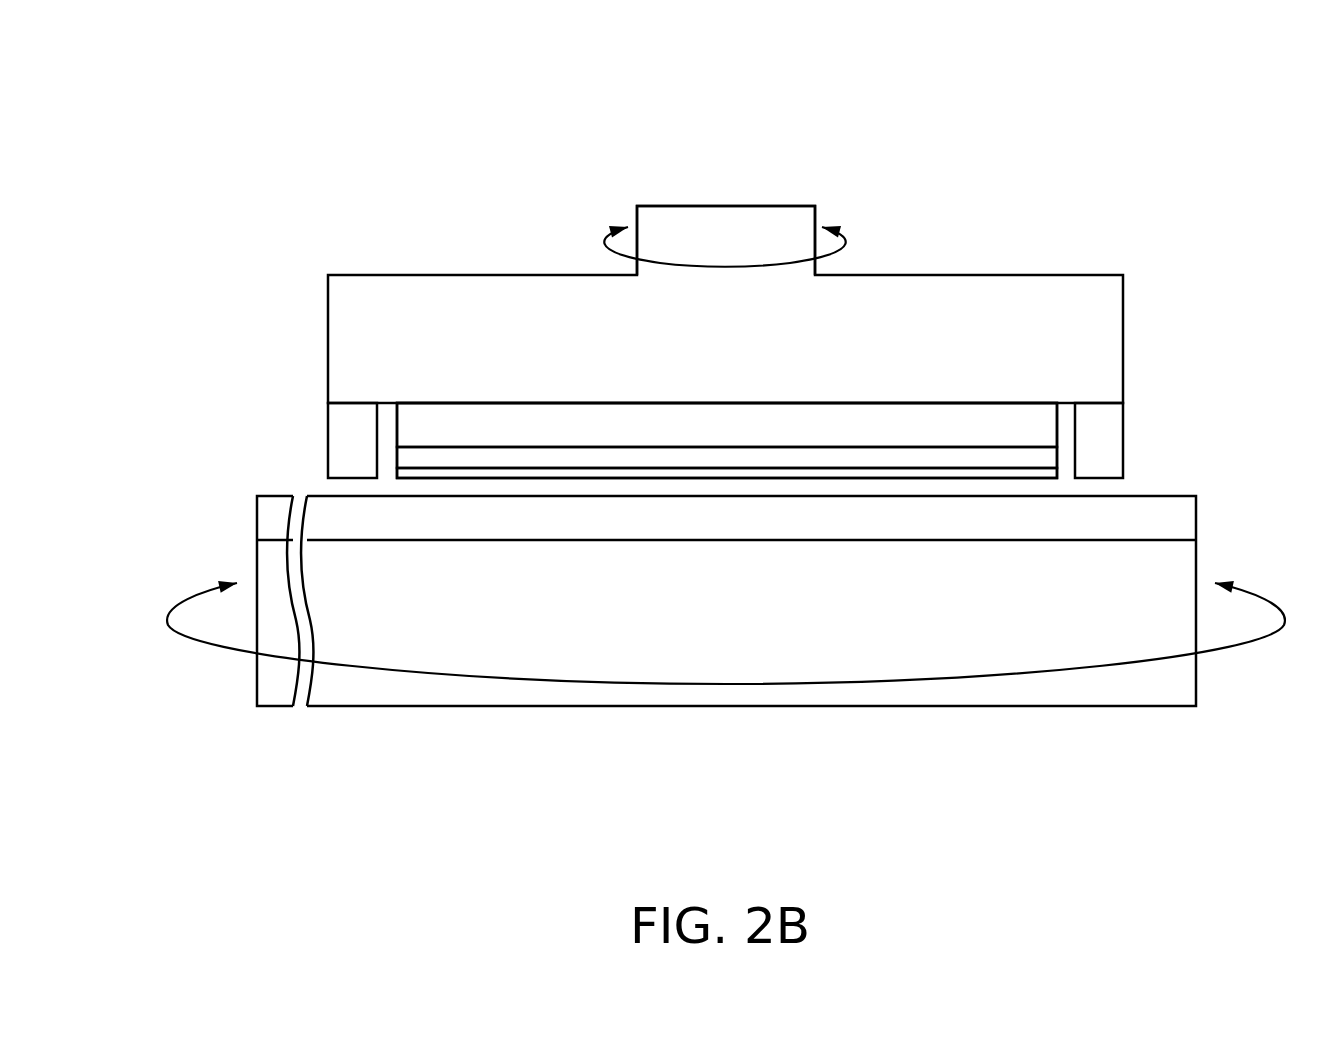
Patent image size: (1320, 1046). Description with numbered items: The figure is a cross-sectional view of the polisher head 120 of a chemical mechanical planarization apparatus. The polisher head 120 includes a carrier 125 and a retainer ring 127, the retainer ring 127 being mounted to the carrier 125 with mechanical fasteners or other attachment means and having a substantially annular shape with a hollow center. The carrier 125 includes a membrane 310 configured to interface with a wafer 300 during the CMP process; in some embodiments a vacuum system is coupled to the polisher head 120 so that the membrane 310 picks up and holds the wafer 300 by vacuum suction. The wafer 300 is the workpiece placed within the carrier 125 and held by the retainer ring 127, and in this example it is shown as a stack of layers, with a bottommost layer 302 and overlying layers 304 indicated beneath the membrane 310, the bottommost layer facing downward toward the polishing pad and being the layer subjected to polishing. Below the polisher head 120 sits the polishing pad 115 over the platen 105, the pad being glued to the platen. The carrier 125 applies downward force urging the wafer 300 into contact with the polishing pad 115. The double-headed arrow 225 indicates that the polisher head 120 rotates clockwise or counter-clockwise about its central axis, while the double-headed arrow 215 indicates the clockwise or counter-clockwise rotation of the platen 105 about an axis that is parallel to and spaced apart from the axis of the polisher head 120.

The polisher head 120 is at (243, 93).
The carrier 125 is at (1108, 336).
The retainer ring 127 is at (342, 441).
The double-headed arrow 225 is at (727, 266).
The wafer 300 is at (810, 337).
The die 302 is at (545, 473).
The bonding layer 304 is at (436, 458).
The membrane 310 is at (488, 417).
The polishing pad 115 is at (1141, 533).
The platen 105 is at (1141, 611).
The double-headed arrow 215 is at (725, 684).